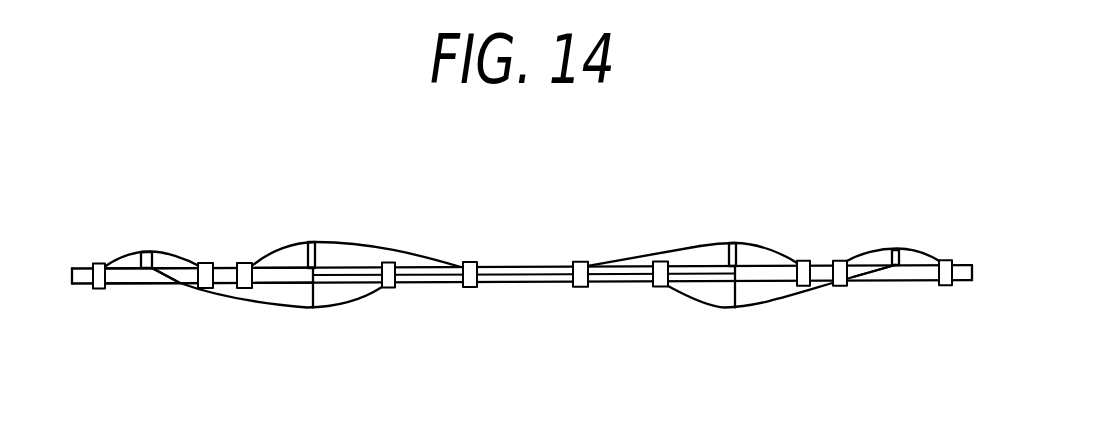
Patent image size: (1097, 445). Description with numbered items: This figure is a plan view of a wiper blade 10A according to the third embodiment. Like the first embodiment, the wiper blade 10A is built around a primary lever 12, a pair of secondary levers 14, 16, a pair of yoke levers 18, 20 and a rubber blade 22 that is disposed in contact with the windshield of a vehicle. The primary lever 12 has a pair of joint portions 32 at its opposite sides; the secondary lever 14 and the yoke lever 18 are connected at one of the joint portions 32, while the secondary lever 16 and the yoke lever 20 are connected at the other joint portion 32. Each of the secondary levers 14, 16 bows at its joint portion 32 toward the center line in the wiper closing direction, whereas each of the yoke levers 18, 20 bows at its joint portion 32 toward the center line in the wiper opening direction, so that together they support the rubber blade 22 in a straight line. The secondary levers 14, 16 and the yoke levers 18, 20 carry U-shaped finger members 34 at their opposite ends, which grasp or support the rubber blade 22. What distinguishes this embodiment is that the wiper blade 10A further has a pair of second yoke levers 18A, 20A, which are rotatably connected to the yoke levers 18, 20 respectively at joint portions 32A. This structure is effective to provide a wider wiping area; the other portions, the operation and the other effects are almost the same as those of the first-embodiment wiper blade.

The wiper blade 10A is at (545, 188).
The primary lever 12 is at (532, 278).
The secondary lever 14 is at (380, 248).
The secondary lever 16 is at (647, 252).
The yoke lever 18 is at (337, 306).
The second yoke lever 18A is at (143, 264).
The yoke lever 20 is at (767, 307).
The second yoke lever 20A is at (891, 249).
The rubber blade 22 is at (277, 279).
The joint portion 32 is at (310, 262).
The joint portion 32A is at (152, 287).
The U-shaped finger member 34 is at (205, 263).